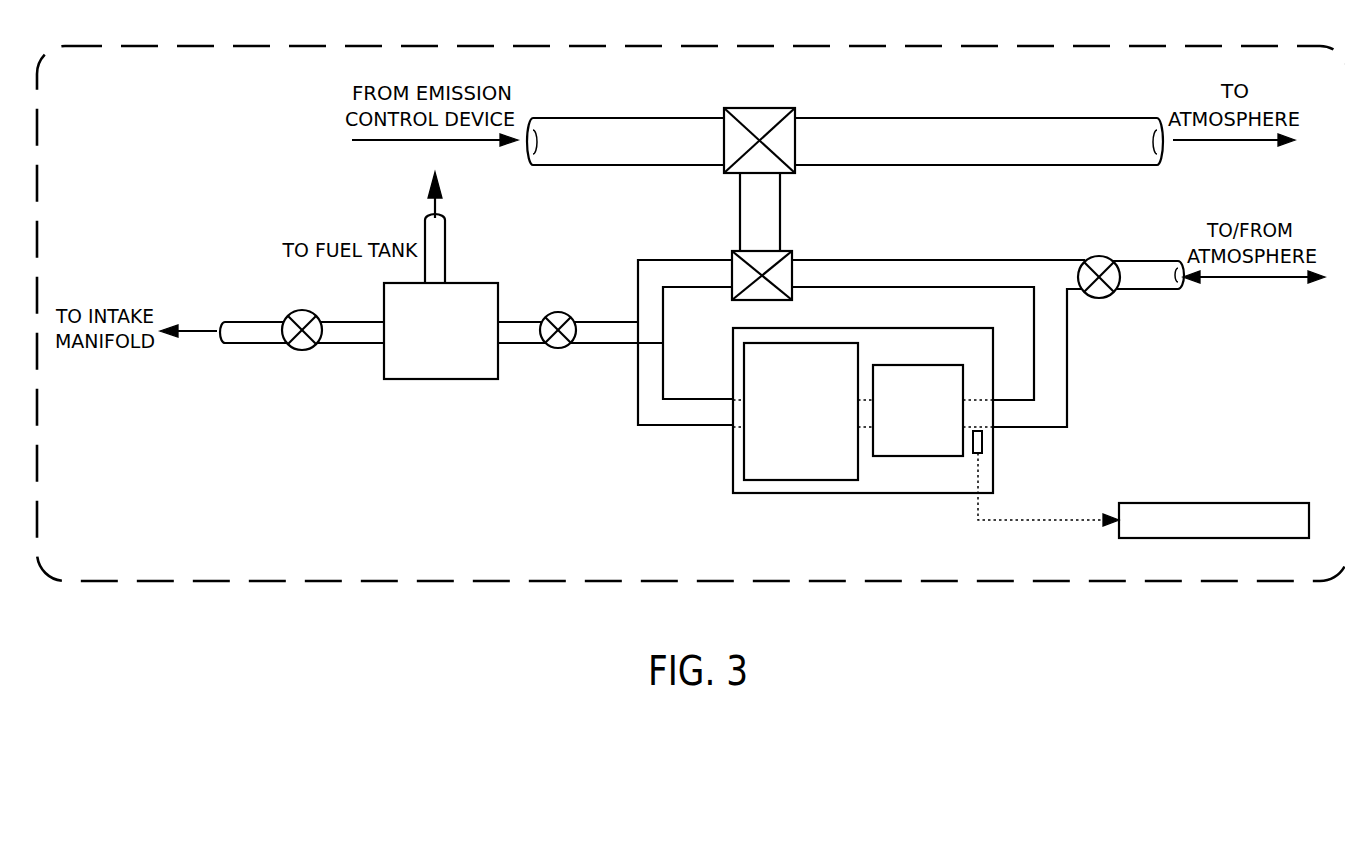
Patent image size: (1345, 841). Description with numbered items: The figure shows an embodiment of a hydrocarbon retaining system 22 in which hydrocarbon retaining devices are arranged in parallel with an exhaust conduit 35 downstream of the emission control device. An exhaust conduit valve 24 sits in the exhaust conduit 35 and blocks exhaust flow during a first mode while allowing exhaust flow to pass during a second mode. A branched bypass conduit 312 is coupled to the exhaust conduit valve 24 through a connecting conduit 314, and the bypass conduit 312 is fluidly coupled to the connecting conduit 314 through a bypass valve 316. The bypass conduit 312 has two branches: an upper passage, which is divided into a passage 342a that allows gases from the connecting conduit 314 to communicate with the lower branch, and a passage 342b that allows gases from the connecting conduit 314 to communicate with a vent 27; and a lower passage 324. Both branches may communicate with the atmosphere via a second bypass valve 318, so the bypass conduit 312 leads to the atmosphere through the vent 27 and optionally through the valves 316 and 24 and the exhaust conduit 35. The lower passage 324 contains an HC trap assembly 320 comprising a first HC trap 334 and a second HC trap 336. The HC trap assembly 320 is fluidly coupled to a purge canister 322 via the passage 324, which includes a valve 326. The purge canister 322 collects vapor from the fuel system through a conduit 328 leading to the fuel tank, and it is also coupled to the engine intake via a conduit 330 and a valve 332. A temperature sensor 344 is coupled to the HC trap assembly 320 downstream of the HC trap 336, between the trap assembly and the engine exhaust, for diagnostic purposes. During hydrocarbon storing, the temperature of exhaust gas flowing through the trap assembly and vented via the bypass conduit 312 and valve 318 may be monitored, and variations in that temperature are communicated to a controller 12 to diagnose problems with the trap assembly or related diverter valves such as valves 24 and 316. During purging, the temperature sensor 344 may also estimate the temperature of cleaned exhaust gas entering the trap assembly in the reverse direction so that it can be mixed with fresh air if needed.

The controller 12 is at (1230, 503).
The hydrocarbon retaining system 22 is at (1076, 45).
The exhaust conduit valve 24 is at (742, 107).
The vent 27 is at (1153, 290).
The exhaust conduit 35 is at (908, 117).
The branched bypass conduit 312 is at (1101, 425).
The connecting conduit 314 is at (744, 215).
The bypass valve 316 is at (790, 250).
The bypass valve 318 is at (1100, 256).
The HC trap assembly 320 is at (918, 328).
The purge canister 322 is at (427, 379).
The lower passage 324 is at (658, 427).
The valve 326 is at (560, 313).
The conduit 328 is at (446, 254).
The conduit 330 is at (248, 343).
The valve 332 is at (310, 312).
The first HC trap 334 is at (782, 421).
The second HC trap 336 is at (900, 421).
The passage 342a is at (683, 259).
The passage 342b is at (890, 259).
The temperature sensor 344 is at (985, 447).